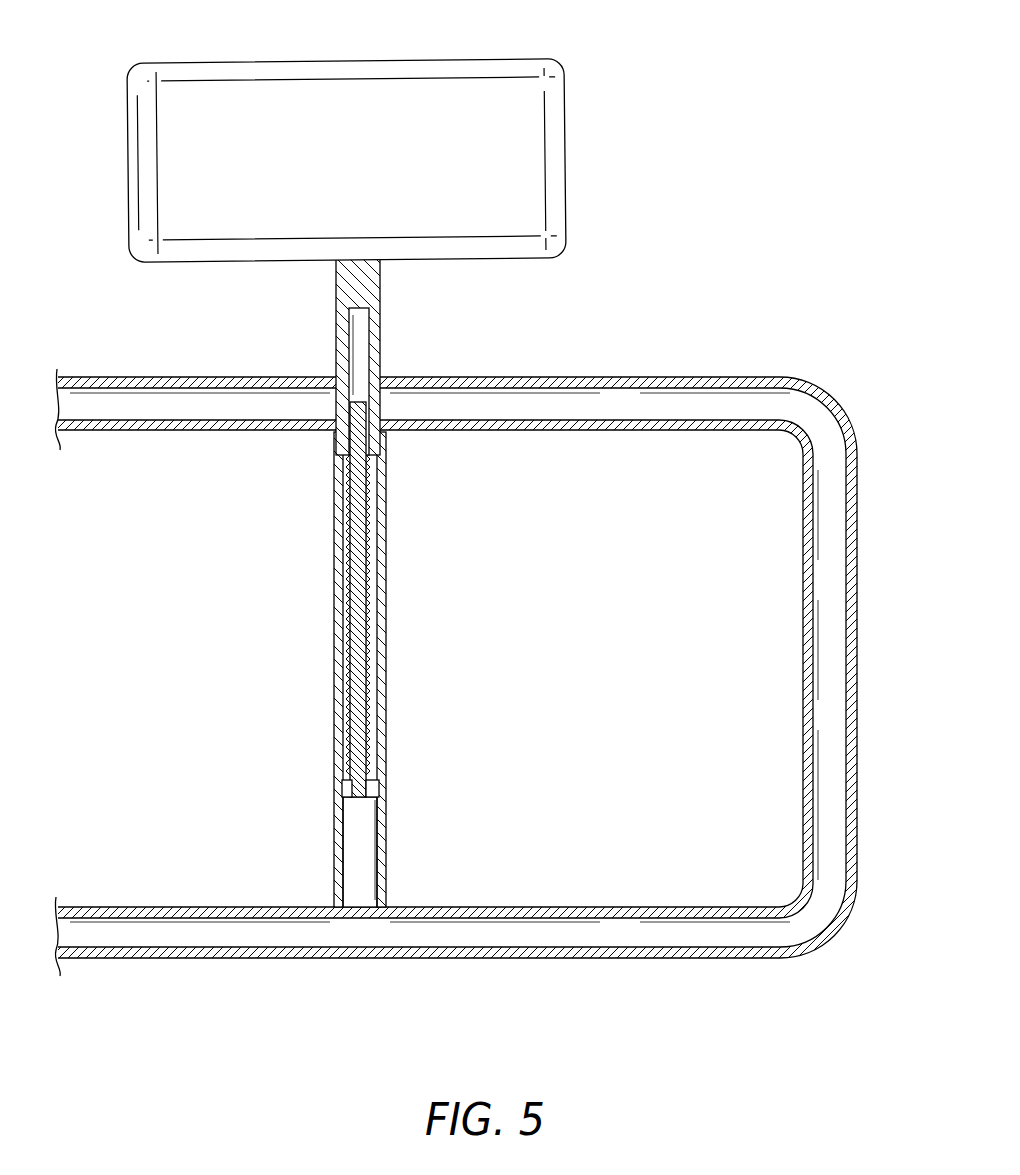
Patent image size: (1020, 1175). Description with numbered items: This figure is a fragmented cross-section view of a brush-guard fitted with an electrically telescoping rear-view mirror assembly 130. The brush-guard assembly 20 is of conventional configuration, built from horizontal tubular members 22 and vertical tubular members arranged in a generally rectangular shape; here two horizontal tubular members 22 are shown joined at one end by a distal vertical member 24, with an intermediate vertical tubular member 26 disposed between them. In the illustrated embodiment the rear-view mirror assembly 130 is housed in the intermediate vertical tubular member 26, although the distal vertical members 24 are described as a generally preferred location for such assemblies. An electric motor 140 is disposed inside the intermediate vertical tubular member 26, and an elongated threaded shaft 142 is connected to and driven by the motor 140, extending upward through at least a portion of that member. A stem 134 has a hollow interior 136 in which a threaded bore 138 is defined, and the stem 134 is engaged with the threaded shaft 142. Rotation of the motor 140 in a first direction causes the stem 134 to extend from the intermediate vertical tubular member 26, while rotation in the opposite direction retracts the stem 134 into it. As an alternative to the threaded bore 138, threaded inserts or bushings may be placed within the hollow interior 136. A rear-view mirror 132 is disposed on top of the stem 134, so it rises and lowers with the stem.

The brush-guard assembly 20 is at (838, 921).
The horizontal tubular members 22 is at (594, 377).
The distal vertical tubular members 24 is at (858, 575).
The intermediate vertical tubular member 26 is at (387, 680).
The electrically telescoping rear-view mirror assembly 130 is at (688, 252).
The rear-view mirror 132 is at (557, 60).
The stem 134 is at (381, 292).
The hollow interior 136 is at (338, 338).
The threaded bore 138 is at (386, 532).
The electric motor 140 is at (343, 821).
The threaded shaft 142 is at (345, 638).